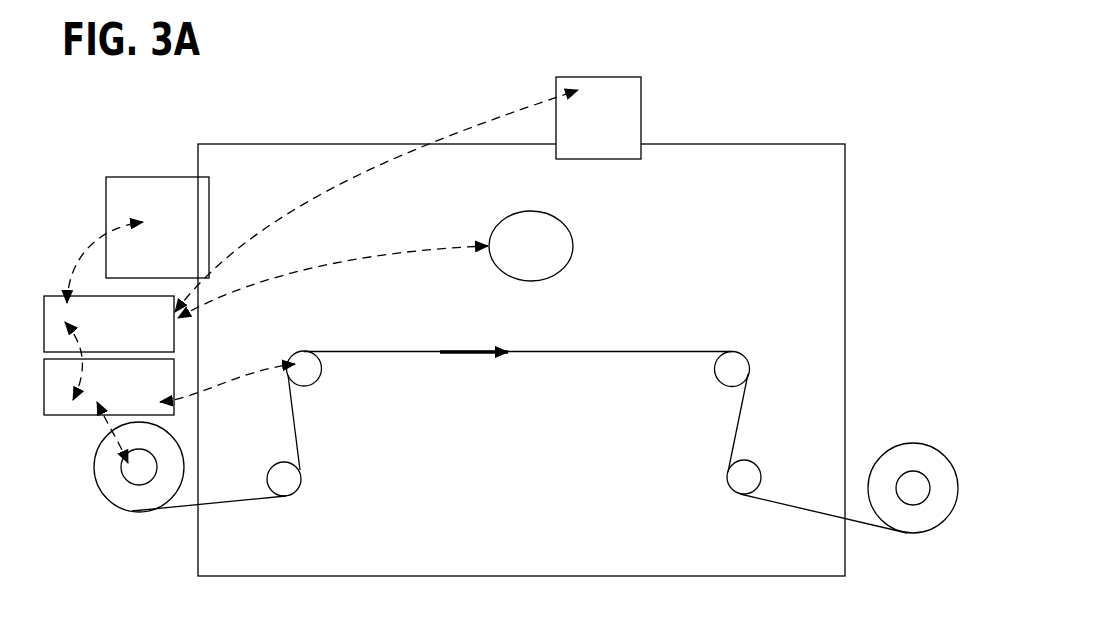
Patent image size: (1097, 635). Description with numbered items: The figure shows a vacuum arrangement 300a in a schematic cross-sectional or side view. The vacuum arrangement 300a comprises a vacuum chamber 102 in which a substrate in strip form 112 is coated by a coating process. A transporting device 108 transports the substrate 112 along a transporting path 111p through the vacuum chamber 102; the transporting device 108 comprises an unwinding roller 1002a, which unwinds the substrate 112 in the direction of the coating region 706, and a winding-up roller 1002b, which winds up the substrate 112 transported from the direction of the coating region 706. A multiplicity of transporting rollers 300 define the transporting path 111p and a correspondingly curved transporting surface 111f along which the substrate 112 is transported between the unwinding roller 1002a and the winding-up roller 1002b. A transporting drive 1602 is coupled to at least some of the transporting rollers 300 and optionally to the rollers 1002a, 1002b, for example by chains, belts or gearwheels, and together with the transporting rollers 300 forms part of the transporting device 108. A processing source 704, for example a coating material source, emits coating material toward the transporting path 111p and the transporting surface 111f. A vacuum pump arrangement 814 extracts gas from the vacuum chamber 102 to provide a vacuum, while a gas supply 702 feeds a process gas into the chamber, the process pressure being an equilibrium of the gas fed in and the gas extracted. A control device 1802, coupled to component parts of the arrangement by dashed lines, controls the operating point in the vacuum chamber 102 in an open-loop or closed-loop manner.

The vacuum arrangement 300a is at (842, 97).
The vacuum chamber 102 is at (770, 143).
The gas supply 702 is at (598, 118).
The processing source 704 is at (531, 246).
The coating region 706 is at (550, 322).
The vacuum pump arrangement 814 is at (146, 177).
The control device 1802 is at (109, 324).
The transporting drive 1602 is at (109, 387).
The unwinding roller 1002a is at (130, 511).
The winding-up roller 1002b is at (907, 533).
The transporting path 111p is at (475, 356).
The transporting surface 111f is at (680, 356).
The substrate in strip form 112 is at (766, 503).
The transporting rollers 300 is at (316, 374).
The transporting device 108 is at (390, 473).